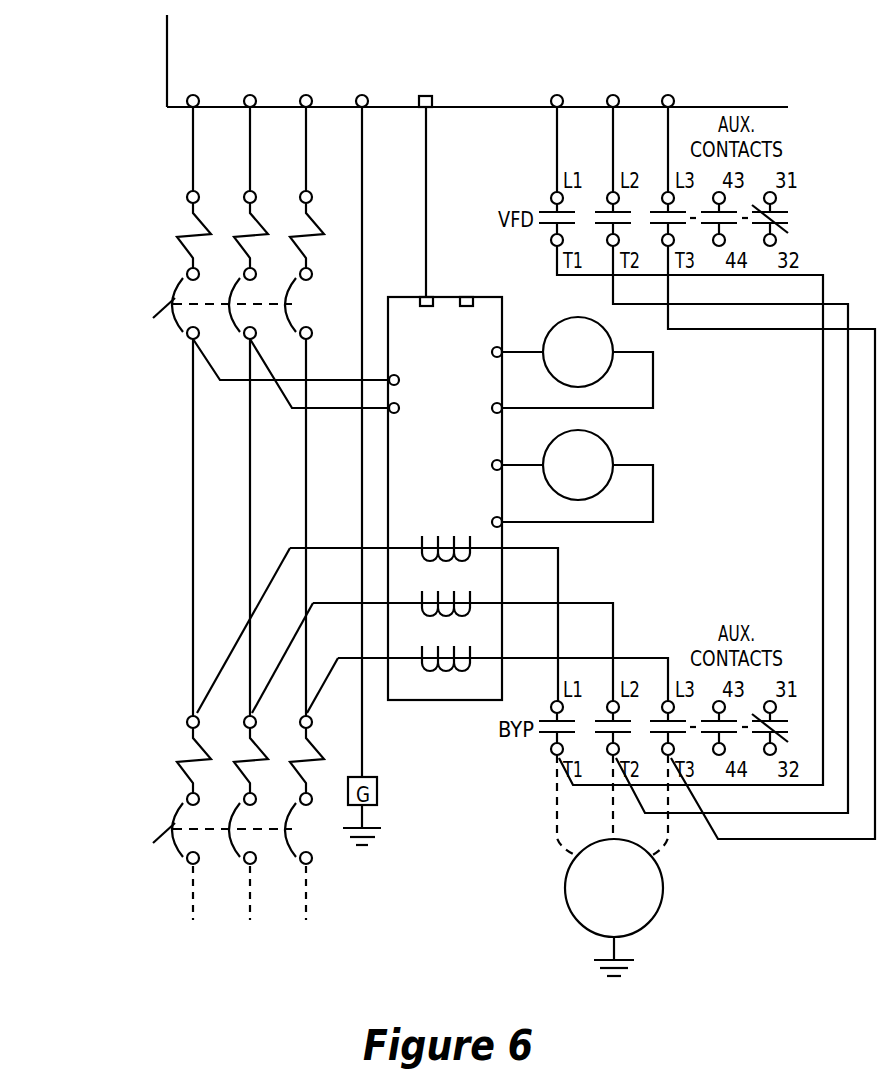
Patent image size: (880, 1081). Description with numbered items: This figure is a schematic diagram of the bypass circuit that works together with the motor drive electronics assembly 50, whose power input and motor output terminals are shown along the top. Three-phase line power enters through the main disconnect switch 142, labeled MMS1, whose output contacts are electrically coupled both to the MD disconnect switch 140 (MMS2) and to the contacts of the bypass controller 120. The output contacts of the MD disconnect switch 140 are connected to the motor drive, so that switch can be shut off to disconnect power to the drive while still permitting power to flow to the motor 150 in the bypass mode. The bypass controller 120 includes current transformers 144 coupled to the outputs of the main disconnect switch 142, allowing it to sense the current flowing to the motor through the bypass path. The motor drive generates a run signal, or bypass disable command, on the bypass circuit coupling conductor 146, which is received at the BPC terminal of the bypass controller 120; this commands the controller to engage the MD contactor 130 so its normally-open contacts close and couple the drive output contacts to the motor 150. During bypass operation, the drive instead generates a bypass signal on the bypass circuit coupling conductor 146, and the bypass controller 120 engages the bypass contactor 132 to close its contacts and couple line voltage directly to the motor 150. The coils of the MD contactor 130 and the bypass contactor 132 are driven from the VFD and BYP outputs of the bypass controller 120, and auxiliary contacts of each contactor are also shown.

The motor drive electronics assembly 50 is at (752, 62).
The bypass controller 120 is at (388, 522).
The MD contactor 130 is at (553, 328).
The bypass contactor 132 is at (612, 449).
The MD disconnect switch 140 is at (92, 301).
The main disconnect switch 142 is at (92, 826).
The current transformers 144 is at (180, 528).
The bypass circuit coupling conductor 146 is at (426, 153).
The motor 150 is at (655, 893).